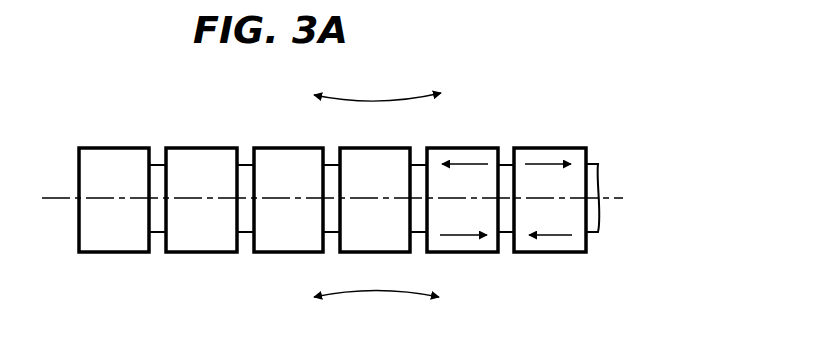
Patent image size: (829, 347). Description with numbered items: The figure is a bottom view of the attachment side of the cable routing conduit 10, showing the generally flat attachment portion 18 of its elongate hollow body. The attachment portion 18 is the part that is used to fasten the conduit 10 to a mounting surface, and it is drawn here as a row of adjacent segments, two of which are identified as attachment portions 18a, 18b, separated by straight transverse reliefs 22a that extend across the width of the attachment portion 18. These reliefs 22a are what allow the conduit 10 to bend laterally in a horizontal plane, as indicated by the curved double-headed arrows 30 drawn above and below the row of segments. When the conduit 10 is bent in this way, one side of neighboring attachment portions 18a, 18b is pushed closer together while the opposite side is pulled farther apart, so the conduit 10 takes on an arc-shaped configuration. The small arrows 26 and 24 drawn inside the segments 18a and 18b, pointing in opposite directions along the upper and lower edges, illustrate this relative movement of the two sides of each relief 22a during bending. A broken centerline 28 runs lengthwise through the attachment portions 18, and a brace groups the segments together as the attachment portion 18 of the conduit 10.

The conduit 10 is at (281, 284).
The attachment portion 18 is at (560, 198).
The attachment portion 18a is at (488, 206).
The attachment portion 18b is at (568, 206).
The straight transverse relief 22a is at (507, 157).
The lower flow direction arrows 24 is at (462, 252).
The upper flow direction arrows 26 is at (470, 163).
The central axis 28 is at (198, 197).
The arrows 30 is at (382, 99).